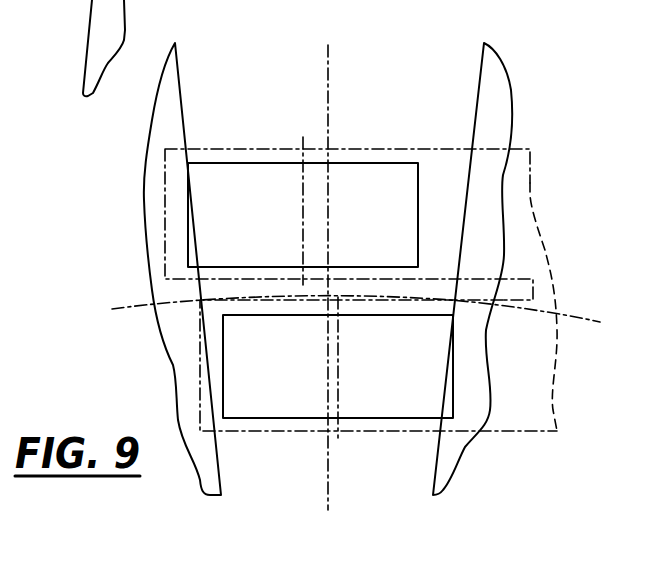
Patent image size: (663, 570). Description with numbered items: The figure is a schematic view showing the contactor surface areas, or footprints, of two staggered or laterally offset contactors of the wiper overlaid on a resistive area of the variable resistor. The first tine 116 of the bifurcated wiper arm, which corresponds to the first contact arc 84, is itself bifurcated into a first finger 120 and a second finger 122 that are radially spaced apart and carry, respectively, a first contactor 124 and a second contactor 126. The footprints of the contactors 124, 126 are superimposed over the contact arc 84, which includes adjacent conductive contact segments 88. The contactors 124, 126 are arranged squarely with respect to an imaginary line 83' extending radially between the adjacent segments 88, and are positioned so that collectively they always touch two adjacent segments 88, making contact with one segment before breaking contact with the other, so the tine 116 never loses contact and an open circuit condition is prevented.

The imaginary line 83' is at (366, 260).
The first contact arc 84 is at (150, 303).
The conductive contact segments 88 is at (170, 110).
The first tine 116 is at (525, 258).
The first finger 120 is at (165, 211).
The second finger 122 is at (200, 363).
The first contactor 124 is at (273, 217).
The second contactor 126 is at (405, 362).